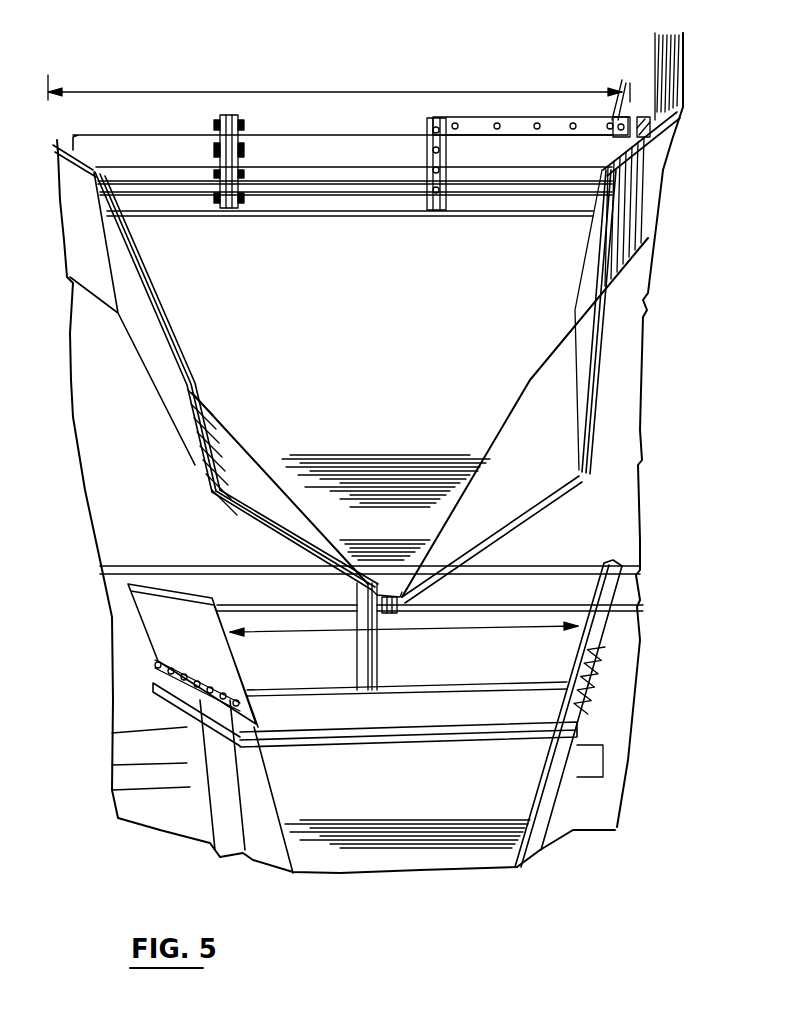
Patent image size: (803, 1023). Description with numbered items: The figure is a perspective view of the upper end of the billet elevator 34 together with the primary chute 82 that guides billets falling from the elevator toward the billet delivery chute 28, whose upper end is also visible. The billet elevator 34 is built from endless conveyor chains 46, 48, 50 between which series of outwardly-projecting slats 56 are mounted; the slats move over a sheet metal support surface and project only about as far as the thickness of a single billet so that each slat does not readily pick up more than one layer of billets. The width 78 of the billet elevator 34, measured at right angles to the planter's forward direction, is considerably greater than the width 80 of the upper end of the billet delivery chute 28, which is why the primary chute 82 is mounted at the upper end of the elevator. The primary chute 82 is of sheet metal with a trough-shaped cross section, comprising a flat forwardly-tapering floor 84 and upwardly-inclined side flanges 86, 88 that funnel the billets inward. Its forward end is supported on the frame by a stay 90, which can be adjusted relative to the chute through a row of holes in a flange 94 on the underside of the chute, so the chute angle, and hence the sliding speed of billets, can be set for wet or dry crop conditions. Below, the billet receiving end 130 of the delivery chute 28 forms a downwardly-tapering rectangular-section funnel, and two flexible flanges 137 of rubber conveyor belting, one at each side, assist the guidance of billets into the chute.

The width of billet elevator 78 is at (134, 92).
The slats 56 is at (170, 166).
The chain 50 is at (227, 120).
The chain 48 is at (428, 155).
The chain 46 is at (566, 152).
The billet elevator 34 is at (654, 107).
The side flange 88 is at (140, 343).
The side flange 86 is at (205, 437).
The floor 84 is at (473, 419).
The primary chute 82 is at (228, 458).
The flange 94 is at (391, 610).
The flexible flanges 137 is at (168, 644).
The width of upper end of billet delivery chute 80 is at (409, 632).
The billet delivery chute 28 is at (592, 716).
The stay 90 is at (355, 665).
The billet receiving end 130 is at (200, 776).